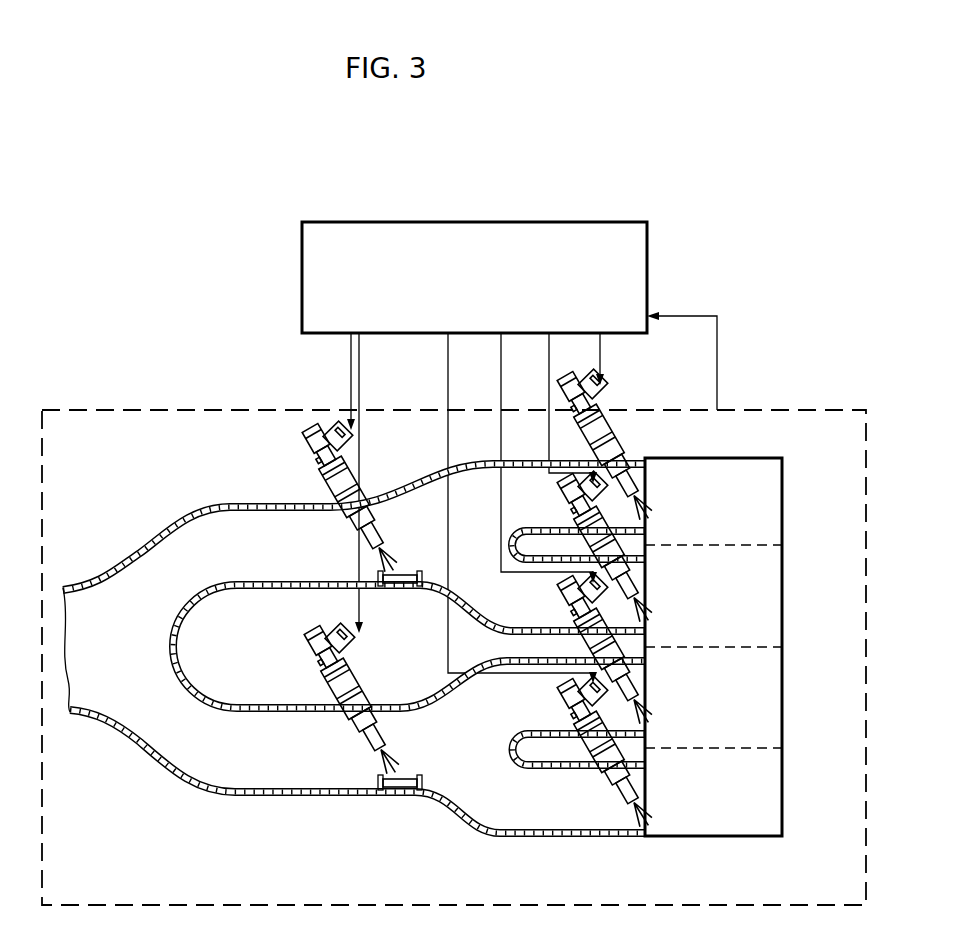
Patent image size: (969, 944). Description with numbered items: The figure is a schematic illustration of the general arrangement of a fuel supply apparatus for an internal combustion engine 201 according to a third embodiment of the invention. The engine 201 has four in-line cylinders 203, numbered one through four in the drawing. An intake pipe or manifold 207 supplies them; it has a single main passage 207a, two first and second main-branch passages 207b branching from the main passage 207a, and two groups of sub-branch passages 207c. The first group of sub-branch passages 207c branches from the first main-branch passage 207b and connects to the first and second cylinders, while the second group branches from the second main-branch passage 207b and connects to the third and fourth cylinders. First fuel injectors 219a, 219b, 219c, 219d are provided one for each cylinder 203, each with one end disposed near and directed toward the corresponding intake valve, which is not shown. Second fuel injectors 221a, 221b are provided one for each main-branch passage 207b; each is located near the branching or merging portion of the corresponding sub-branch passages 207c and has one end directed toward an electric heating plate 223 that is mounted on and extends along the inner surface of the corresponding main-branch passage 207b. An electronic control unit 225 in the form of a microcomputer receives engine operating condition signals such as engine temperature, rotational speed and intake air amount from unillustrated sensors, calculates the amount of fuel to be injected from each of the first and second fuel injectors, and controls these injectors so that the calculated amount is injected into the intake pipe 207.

The internal combustion engine 201 is at (833, 408).
The cylinders 203 is at (681, 849).
The intake pipe or manifold 207 is at (400, 654).
The main passage 207a is at (72, 718).
The main-branch passages 207b is at (238, 503).
The sub-branch passages 207c is at (652, 462).
The first fuel injector 219a is at (570, 705).
The first fuel injector 219b is at (557, 600).
The first fuel injector 219c is at (553, 502).
The first fuel injector 219d is at (613, 428).
The second fuel injector 221a is at (364, 657).
The second fuel injector 221b is at (360, 452).
The electric heating plate 223 is at (407, 568).
The electronic control unit 225 is at (651, 242).